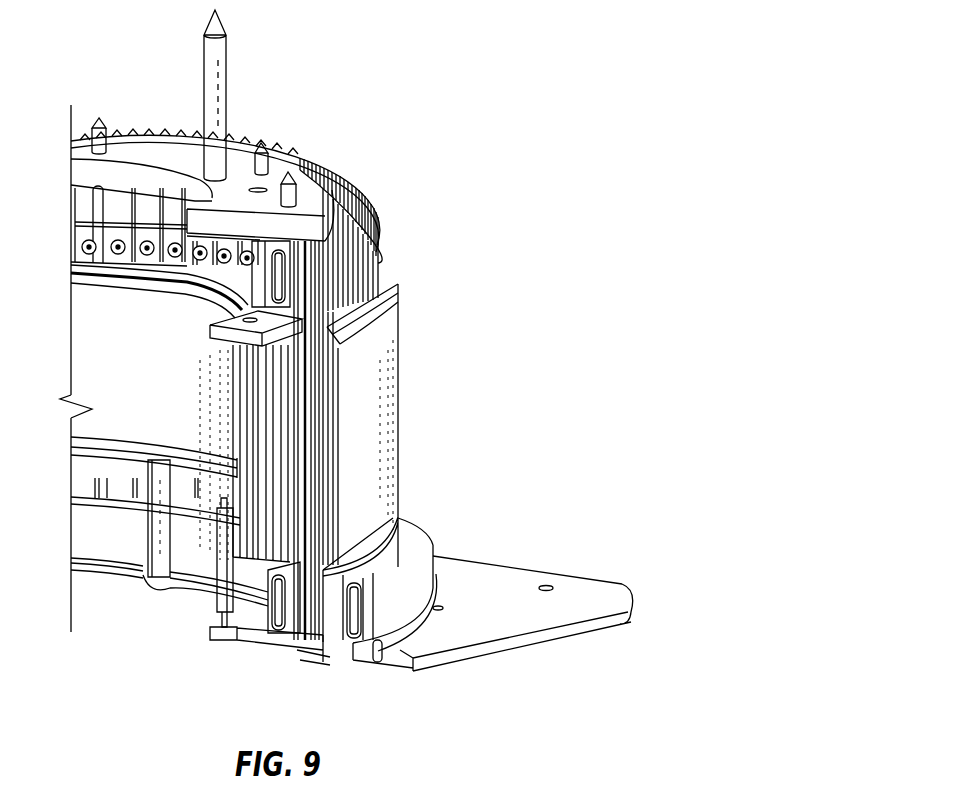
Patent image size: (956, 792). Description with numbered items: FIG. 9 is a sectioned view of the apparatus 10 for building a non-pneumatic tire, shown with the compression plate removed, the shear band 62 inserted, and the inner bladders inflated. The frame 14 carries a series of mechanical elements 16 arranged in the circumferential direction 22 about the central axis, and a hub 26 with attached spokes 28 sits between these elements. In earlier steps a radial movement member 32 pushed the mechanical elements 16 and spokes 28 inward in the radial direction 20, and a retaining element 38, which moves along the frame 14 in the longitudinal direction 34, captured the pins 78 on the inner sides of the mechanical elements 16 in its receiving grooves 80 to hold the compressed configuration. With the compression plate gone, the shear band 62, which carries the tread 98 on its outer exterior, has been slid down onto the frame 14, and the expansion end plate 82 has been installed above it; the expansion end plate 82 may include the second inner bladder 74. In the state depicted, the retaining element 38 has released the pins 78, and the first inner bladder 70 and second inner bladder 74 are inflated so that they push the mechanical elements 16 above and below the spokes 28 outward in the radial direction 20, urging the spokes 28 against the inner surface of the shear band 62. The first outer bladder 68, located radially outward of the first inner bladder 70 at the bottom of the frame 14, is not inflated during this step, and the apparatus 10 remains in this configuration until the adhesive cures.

The apparatus 10 is at (548, 54).
The frame 14 is at (143, 587).
The mechanical elements 16 is at (365, 257).
The radial direction 20 is at (172, 685).
The circumferential direction 22 is at (383, 150).
The hub 26 is at (146, 402).
The spokes 28 is at (250, 398).
The radial movement member 32 is at (273, 607).
The longitudinal direction 34 is at (527, 320).
The retaining element 38 is at (80, 290).
The shear band 62 is at (392, 440).
The first outer bladder 68 is at (355, 648).
The first inner bladder 70 is at (280, 633).
The second inner bladder 74 is at (300, 283).
The pins 78 is at (152, 252).
The receiving grooves 80 is at (145, 263).
The expansion end plate 82 is at (305, 146).
The tread 98 is at (412, 501).